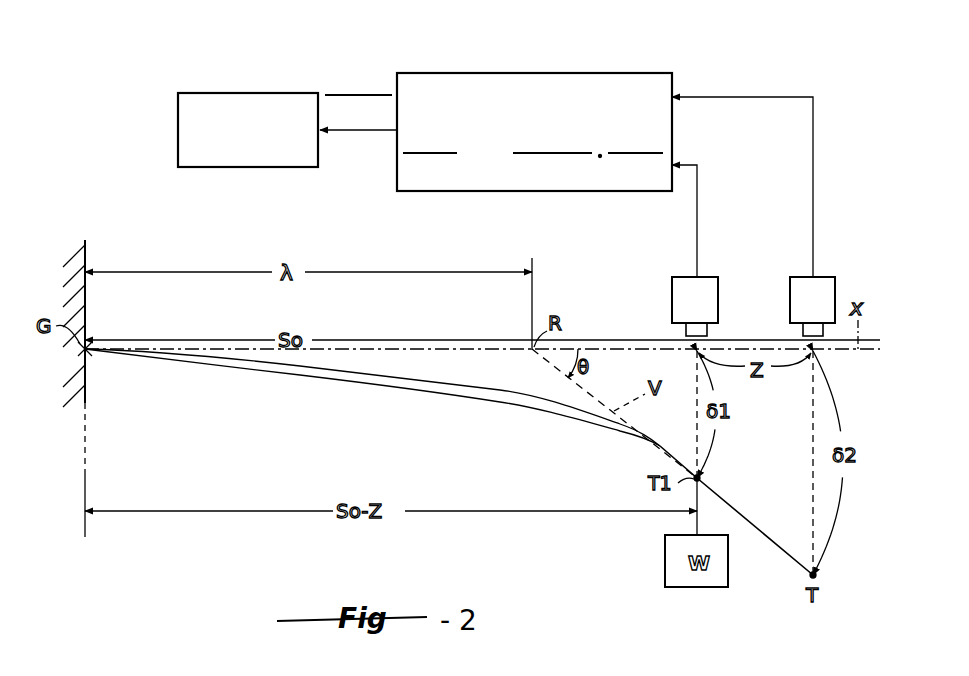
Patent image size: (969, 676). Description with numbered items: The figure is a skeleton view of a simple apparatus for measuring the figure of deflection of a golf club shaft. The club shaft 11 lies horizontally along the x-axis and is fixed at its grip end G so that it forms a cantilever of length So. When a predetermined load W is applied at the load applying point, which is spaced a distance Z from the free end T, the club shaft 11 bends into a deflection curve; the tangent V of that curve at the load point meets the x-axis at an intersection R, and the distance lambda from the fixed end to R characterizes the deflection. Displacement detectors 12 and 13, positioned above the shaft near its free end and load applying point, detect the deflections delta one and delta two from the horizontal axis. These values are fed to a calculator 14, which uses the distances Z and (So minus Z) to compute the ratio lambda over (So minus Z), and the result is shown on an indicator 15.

The club shaft 11 is at (278, 373).
The displacement detector 12 is at (718, 300).
The displacement detector 13 is at (835, 300).
The calculator 14 is at (640, 78).
The indicator 15 is at (304, 95).